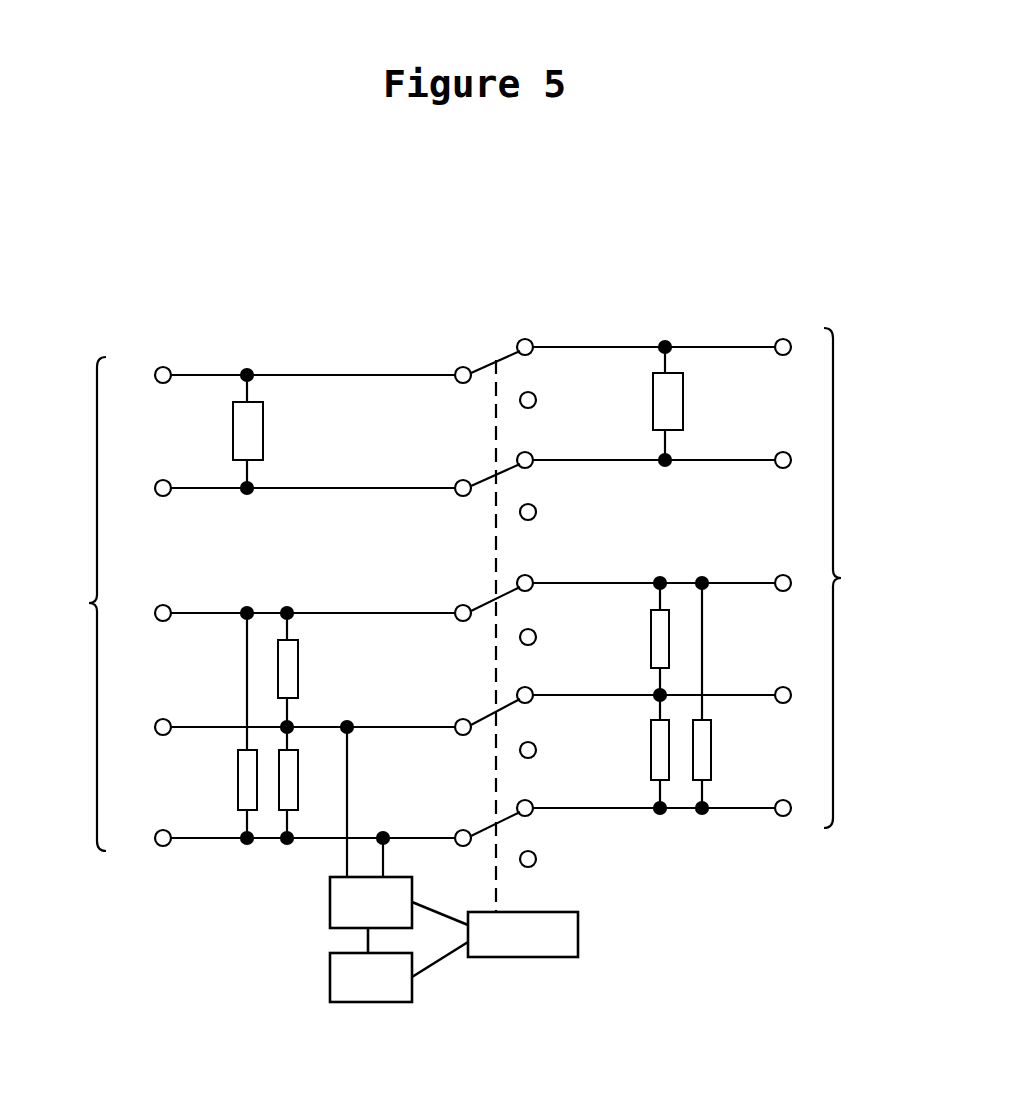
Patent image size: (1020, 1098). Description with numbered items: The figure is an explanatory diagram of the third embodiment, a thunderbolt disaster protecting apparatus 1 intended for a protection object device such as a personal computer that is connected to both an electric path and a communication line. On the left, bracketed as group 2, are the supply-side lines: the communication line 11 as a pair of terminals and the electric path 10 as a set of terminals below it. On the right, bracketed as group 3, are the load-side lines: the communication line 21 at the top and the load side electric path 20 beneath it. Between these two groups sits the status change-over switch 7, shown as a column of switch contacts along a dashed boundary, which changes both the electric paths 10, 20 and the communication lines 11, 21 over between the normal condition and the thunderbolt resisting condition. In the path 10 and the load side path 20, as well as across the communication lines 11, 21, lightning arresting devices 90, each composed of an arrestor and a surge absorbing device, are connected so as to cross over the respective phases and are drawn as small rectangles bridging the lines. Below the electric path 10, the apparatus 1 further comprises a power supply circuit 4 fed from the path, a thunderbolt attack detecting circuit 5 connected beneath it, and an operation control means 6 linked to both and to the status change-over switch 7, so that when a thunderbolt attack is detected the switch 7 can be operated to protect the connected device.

The thunderbolt disaster protecting apparatus 1 is at (570, 272).
The first terminal section 2 is at (70, 604).
The second terminal section 3 is at (866, 578).
The power supply circuit 4 is at (330, 910).
The thunderbolt attack detecting circuit 5 is at (368, 983).
The operation control means 6 is at (516, 940).
The status change-over switch 7 is at (497, 356).
The electric path 10 is at (208, 607).
The communication line 11 is at (215, 365).
The load side electric path 20 is at (735, 576).
The communication line 21 is at (727, 336).
The lightning arresting device 90 is at (248, 412).